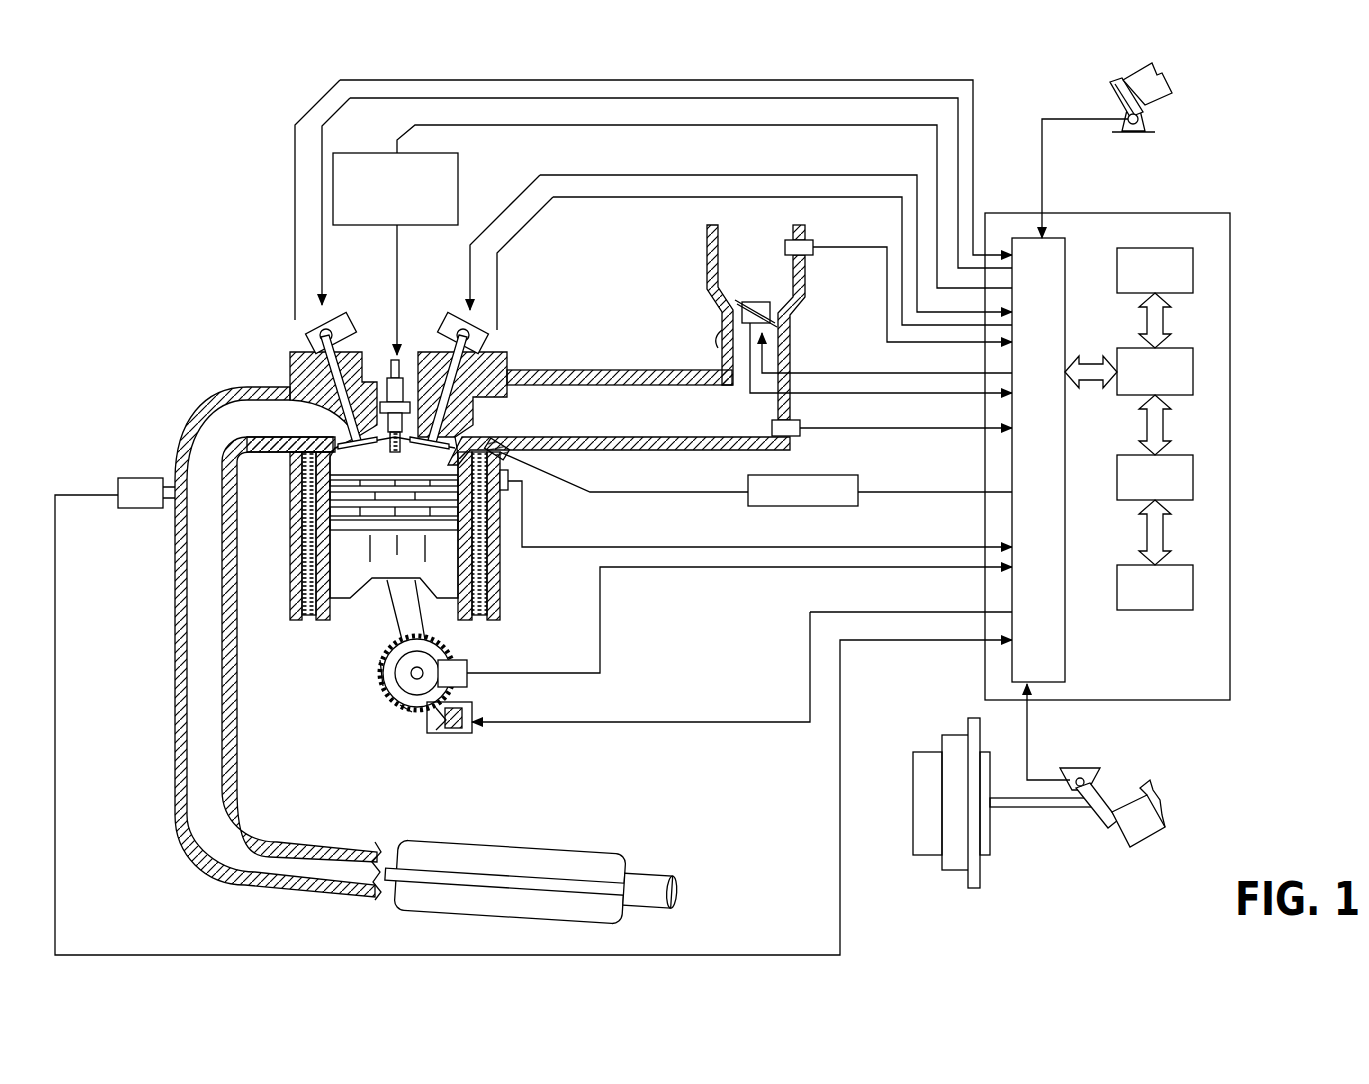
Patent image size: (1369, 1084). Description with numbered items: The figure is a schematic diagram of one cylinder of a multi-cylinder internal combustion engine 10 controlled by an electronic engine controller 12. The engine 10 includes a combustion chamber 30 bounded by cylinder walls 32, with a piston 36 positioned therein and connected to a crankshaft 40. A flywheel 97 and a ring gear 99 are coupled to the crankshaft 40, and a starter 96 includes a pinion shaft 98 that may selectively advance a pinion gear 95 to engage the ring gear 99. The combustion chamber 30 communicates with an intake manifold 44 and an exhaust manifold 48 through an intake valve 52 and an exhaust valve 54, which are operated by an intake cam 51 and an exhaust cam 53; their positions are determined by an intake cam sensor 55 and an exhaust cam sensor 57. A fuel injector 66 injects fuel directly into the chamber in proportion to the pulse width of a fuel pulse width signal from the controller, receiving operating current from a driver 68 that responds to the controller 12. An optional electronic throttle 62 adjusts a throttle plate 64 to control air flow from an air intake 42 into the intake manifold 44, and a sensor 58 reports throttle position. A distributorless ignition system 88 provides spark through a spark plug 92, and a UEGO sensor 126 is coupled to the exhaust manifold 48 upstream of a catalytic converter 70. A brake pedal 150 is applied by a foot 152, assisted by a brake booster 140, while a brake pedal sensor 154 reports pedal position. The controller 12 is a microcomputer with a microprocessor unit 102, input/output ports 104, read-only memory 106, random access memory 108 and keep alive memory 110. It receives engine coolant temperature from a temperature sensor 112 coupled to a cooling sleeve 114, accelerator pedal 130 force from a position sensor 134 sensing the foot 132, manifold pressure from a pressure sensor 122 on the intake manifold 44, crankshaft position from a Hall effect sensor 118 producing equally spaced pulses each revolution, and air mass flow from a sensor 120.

The internal combustion engine 10 is at (220, 303).
The electronic engine controller 12 is at (1215, 213).
The combustion chamber 30 is at (300, 575).
The cylinder walls 32 is at (330, 605).
The piston 36 is at (378, 565).
The crankshaft 40 is at (400, 708).
The air intake 42 is at (756, 322).
The intake manifold 44 is at (619, 417).
The exhaust manifold 48 is at (278, 643).
The intake cam 51 is at (463, 330).
The intake valve 52 is at (450, 437).
The exhaust cam 53 is at (328, 325).
The exhaust valve 54 is at (290, 392).
The intake cam sensor 55 is at (480, 340).
The exhaust cam sensor 57 is at (318, 333).
The throttle position sensor 58 is at (720, 338).
The electronic throttle 62 is at (765, 306).
The throttle plate 64 is at (732, 310).
The fuel injector 66 is at (512, 457).
The driver 68 is at (778, 507).
The catalytic converter 70 is at (410, 845).
The distributorless ignition system 88 is at (350, 153).
The spark plug 92 is at (398, 355).
The pinion gear 95 is at (457, 735).
The starter 96 is at (465, 733).
The flywheel 97 is at (395, 688).
The pinion shaft 98 is at (440, 735).
The ring gear 99 is at (415, 718).
The microprocessor unit 102 is at (1195, 365).
The input/output ports 104 is at (1070, 248).
The read-only memory 106 is at (1195, 265).
The random access memory 108 is at (1195, 477).
The keep alive memory 110 is at (1195, 583).
The temperature sensor 112 is at (508, 485).
The cooling sleeve 114 is at (500, 573).
The Hall effect sensor 118 is at (467, 662).
The air mass sensor 120 is at (805, 240).
The pressure sensor 122 is at (792, 437).
The Universal Exhaust Gas Oxygen (UEGO) sensor 126 is at (118, 485).
The accelerator pedal 130 is at (1110, 93).
The foot 132 is at (1168, 80).
The position sensor 134 is at (1140, 119).
The brake booster 140 is at (912, 855).
The brake pedal 150 is at (1108, 835).
The foot 152 is at (1145, 793).
The brake pedal sensor 154 is at (1068, 775).